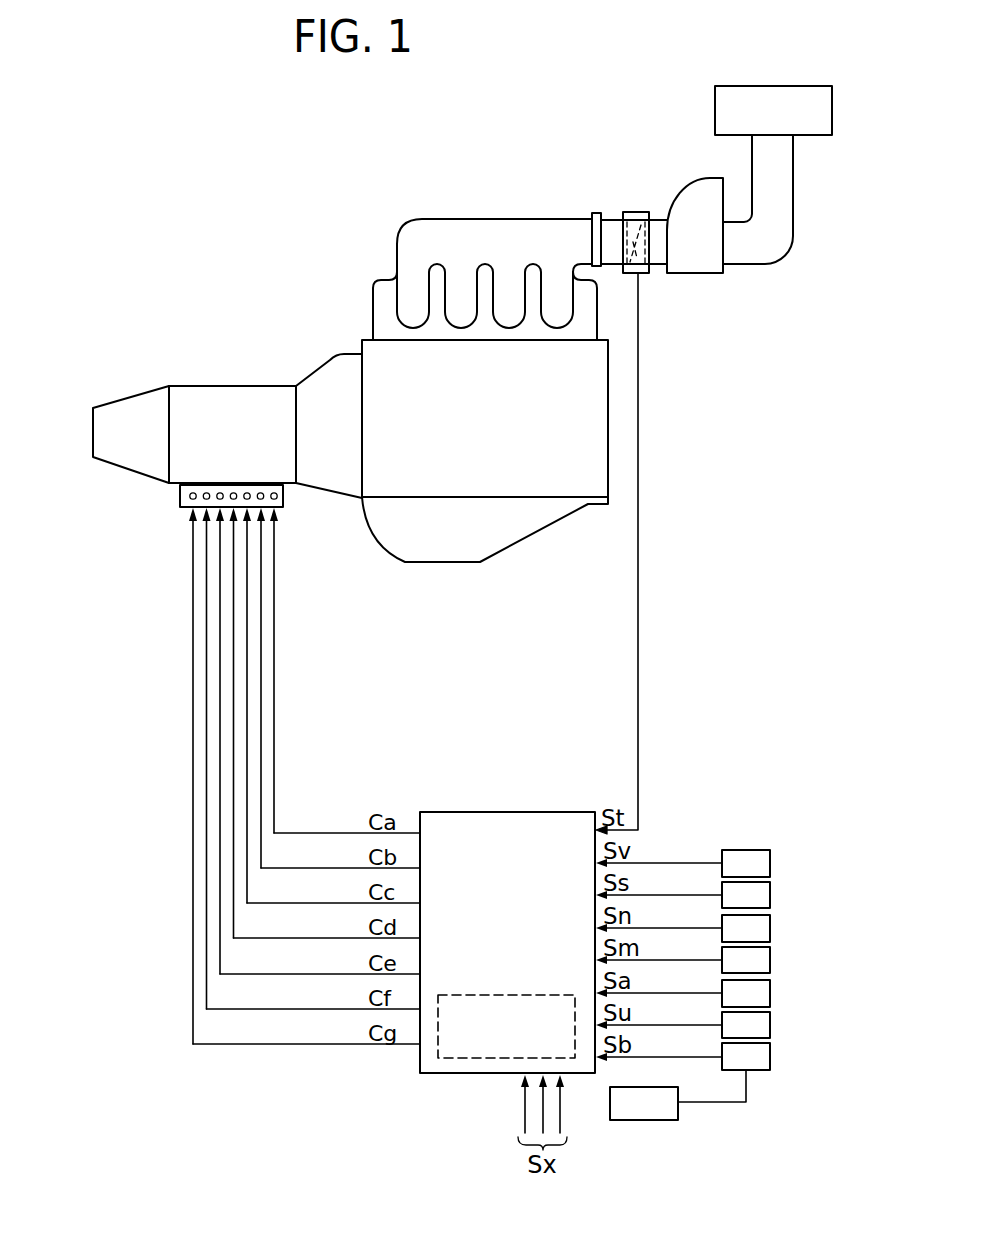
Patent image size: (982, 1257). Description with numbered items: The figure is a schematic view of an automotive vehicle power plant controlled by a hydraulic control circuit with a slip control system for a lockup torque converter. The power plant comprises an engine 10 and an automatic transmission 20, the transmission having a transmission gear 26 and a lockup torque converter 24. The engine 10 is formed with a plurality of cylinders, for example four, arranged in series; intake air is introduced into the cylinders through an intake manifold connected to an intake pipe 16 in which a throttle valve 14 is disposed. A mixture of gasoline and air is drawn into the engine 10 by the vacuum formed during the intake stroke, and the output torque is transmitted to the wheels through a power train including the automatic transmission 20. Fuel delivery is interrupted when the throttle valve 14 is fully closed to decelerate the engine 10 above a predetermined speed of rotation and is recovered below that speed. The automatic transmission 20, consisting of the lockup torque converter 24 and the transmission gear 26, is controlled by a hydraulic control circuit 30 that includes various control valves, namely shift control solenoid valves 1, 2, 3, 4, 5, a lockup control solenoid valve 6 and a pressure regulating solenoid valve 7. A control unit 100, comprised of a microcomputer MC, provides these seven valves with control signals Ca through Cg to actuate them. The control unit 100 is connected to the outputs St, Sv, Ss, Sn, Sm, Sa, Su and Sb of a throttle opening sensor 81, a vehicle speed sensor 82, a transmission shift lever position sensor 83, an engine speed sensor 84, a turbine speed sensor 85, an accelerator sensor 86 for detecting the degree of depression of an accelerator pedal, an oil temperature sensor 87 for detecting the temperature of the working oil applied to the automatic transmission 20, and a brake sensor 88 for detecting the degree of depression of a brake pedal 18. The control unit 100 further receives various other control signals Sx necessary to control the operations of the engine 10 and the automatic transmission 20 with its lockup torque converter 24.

The shift control solenoid valve 1 is at (285, 501).
The shift control solenoid valve 2 is at (261, 492).
The shift control solenoid valve 3 is at (247, 492).
The shift control solenoid valve 4 is at (233, 492).
The shift control solenoid valve 5 is at (218, 492).
The lockup control solenoid valve 6 is at (204, 492).
The pressure regulating solenoid valve 7 is at (187, 498).
The engine 10 is at (572, 488).
The throttle valve 14 is at (632, 250).
The intake pipe 16 is at (510, 220).
The brake pedal 18 is at (652, 1122).
The automatic transmission 20 is at (241, 362).
The lockup torque converter 24 is at (332, 370).
The transmission gear 26 is at (182, 393).
The hydraulic control circuit 30 is at (283, 509).
The throttle opening sensor 81 is at (648, 275).
The vehicle speed sensor 82 is at (770, 862).
The transmission shift lever position sensor 83 is at (770, 893).
The engine speed sensor 84 is at (770, 927).
The turbine speed sensor 85 is at (770, 960).
The accelerator sensor 86 is at (770, 993).
The oil temperature sensor 87 is at (770, 1027).
The brake sensor 88 is at (770, 1060).
The control unit 100 is at (538, 812).